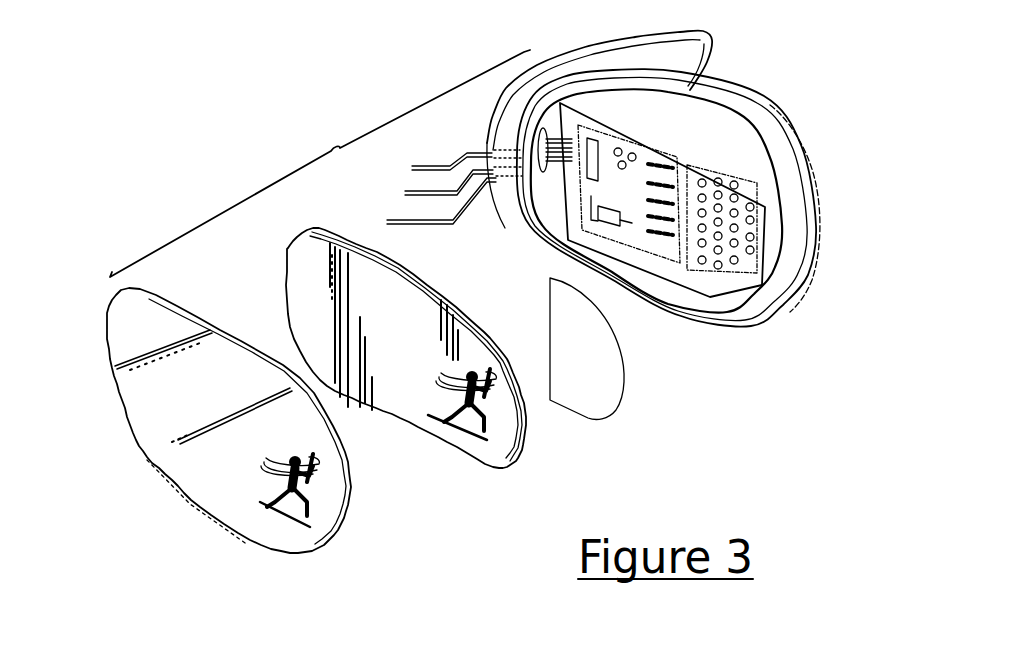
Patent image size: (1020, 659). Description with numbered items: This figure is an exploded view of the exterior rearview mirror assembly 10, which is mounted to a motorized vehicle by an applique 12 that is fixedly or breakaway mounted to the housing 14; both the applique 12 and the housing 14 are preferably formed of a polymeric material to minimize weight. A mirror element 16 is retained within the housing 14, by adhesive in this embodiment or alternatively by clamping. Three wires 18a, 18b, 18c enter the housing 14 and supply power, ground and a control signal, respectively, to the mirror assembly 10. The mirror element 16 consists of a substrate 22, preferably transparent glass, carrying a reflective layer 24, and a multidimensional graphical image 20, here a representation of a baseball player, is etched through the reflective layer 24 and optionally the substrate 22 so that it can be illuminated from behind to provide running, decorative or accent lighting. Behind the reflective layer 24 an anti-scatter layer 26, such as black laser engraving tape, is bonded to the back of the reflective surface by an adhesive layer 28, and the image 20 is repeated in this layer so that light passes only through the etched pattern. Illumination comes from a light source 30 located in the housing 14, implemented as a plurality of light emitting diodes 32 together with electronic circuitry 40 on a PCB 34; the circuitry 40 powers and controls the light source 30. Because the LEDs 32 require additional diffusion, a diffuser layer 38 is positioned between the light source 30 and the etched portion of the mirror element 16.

The exterior rearview mirror assembly 10 is at (311, 125).
The applique 12 is at (695, 52).
The housing 14 is at (773, 322).
The mirror element 16 is at (90, 396).
The wire 18a is at (437, 167).
The wire 18b is at (412, 193).
The wire 18c is at (402, 220).
The multidimensional graphical image 20 is at (283, 527).
The substrate 22 is at (192, 467).
The reflective layer 24 is at (355, 498).
The anti-scatter layer 26 is at (428, 282).
The adhesive layer 28 is at (406, 409).
The light source 30 is at (730, 273).
The light emitting diodes 32 is at (720, 177).
The PCB 34 is at (670, 143).
The diffuser layer 38 is at (620, 410).
The electronic circuitry 40 is at (650, 250).